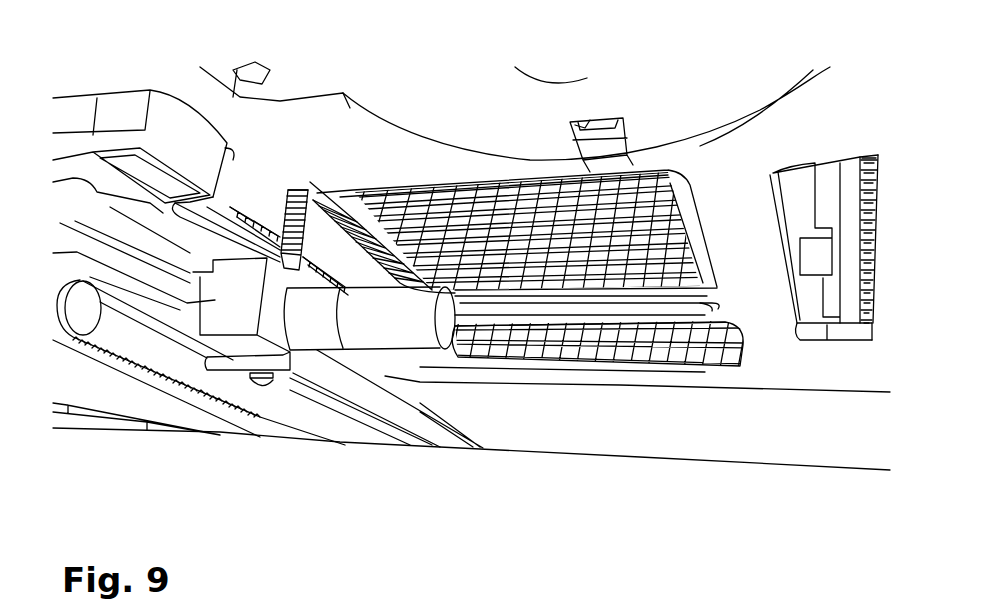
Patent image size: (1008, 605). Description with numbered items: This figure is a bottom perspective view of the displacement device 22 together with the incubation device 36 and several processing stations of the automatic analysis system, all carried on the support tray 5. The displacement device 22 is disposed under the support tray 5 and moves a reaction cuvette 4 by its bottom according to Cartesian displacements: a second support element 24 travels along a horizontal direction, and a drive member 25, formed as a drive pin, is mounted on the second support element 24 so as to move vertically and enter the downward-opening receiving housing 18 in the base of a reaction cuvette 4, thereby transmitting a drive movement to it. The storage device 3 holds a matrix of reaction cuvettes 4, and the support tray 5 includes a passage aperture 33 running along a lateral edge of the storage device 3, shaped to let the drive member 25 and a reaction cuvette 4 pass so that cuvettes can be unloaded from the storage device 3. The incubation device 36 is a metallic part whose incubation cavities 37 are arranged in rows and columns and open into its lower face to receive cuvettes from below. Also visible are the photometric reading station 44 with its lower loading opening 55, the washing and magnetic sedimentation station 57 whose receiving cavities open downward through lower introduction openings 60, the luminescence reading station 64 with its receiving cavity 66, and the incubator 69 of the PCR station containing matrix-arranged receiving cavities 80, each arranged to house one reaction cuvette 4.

The storage device 3 is at (807, 165).
The reaction cuvette 4 is at (293, 193).
The support tray 5 is at (840, 350).
The receiving housing 18 is at (877, 202).
The displacement device 22 is at (133, 374).
The second support element 24 is at (237, 327).
The drive member 25 is at (280, 378).
The passage aperture 33 is at (810, 330).
The incubation device 36 is at (683, 200).
The incubation cavity 37 is at (553, 213).
The photometric reading station 44 is at (552, 97).
The lower loading opening 55 is at (577, 127).
The washing and magnetic sedimentation station 57 is at (205, 218).
The lower introduction opening 60 is at (250, 210).
The luminescence reading station 64 is at (78, 107).
The receiving cavity 66 is at (160, 188).
The incubator 69 is at (727, 333).
The receiving cavities 80 is at (583, 343).